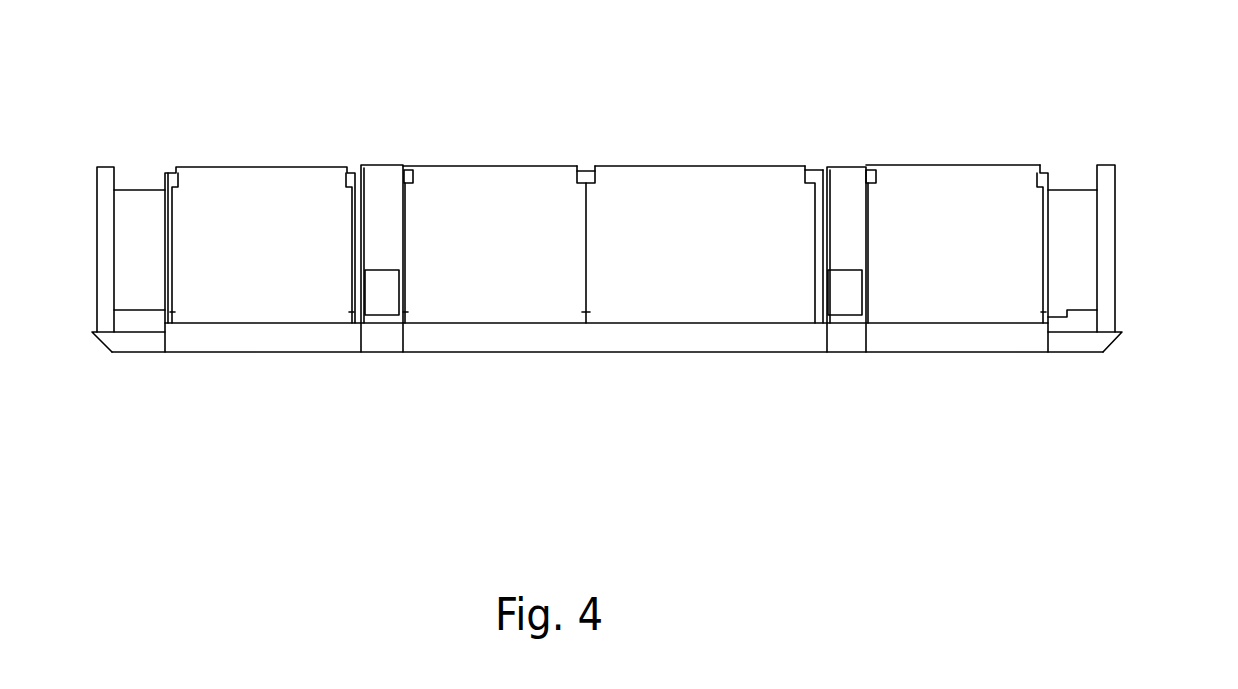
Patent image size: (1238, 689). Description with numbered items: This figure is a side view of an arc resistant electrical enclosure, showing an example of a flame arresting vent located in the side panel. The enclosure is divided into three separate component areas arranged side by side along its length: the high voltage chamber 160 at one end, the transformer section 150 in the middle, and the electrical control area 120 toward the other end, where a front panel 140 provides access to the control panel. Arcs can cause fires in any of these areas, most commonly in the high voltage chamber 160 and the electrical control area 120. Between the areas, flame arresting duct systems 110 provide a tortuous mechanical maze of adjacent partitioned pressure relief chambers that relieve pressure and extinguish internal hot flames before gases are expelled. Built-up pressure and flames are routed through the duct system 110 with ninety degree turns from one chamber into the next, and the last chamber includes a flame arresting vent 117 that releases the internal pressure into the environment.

The flame arresting duct system 110 is at (646, 199).
The flame arresting vent 117 is at (655, 347).
The electrical control area 120 is at (957, 203).
The front panel 140 is at (1125, 198).
The transformer section 150 is at (613, 194).
The high voltage chamber 160 is at (260, 205).